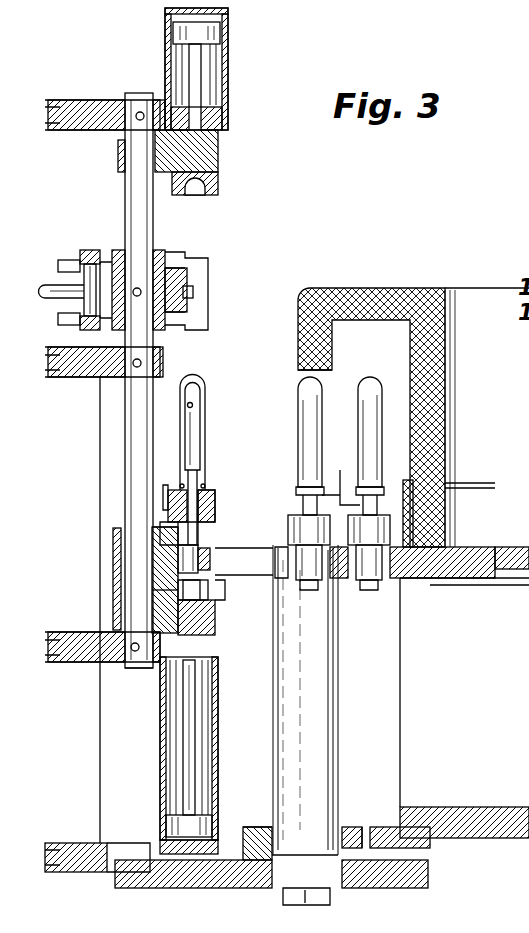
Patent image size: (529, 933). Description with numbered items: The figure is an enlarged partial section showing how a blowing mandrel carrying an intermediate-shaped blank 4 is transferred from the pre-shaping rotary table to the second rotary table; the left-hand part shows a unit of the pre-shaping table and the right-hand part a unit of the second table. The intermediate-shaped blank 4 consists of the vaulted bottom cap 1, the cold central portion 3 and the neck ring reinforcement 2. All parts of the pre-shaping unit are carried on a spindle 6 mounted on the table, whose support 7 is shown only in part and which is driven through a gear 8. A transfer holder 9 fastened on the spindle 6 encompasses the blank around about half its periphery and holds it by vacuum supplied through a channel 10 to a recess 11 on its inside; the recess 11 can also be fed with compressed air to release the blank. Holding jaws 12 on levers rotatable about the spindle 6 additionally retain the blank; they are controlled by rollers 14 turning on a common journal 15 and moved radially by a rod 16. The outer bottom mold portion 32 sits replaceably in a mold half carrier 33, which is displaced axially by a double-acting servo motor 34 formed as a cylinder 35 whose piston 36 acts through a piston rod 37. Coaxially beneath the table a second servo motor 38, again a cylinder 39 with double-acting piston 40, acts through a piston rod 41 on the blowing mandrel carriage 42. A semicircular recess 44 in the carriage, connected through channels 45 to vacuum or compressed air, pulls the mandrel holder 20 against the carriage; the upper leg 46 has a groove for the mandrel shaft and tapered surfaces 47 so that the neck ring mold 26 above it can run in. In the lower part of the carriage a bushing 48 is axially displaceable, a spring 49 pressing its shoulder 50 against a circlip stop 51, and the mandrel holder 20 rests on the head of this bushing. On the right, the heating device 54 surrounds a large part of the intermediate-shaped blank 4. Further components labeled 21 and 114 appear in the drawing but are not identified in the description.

The vaulted bottom cap 1 is at (200, 378).
The neck ring reinforcement 2 is at (215, 482).
The central portion 3 is at (204, 408).
The intermediate-shaped blank 4 is at (365, 428).
The spindle 6 is at (130, 438).
The support of the rotary table 7 is at (92, 108).
The gear 8 is at (227, 890).
The transfer holder 9 is at (118, 276).
The channel 10 is at (187, 291).
The recess 11 is at (190, 297).
The holding jaws 12 is at (198, 264).
The rollers 14 is at (82, 262).
The common journal 15 is at (84, 308).
The rod 16 is at (50, 285).
The mandrel holder 20 is at (200, 548).
The coupling nuts 21 is at (215, 612).
The neck ring mold 26 is at (212, 505).
The outer bottom mold portion 32 is at (208, 190).
The mold half carrier 33 is at (212, 155).
The double-acting servo motor 34 is at (165, 68).
The cylinder 35 is at (228, 68).
The double-acting piston 36 is at (220, 33).
The piston rod 37 is at (200, 95).
The servo motor 38 is at (157, 746).
The cylinder 39 is at (166, 770).
The double-acting piston 40 is at (178, 824).
The piston rod 41 is at (195, 790).
The blowing mandrel carriage 42 is at (113, 613).
The recess 44 is at (160, 567).
The channels 45 is at (150, 548).
The upper leg 46 is at (165, 530).
The tapered surfaces 47 is at (168, 512).
The bushing 48 is at (200, 596).
The spring 49 is at (138, 670).
The shoulder 50 is at (182, 582).
The stop 51 is at (160, 588).
The heating device 54 is at (328, 297).
The column plate 114 is at (245, 572).